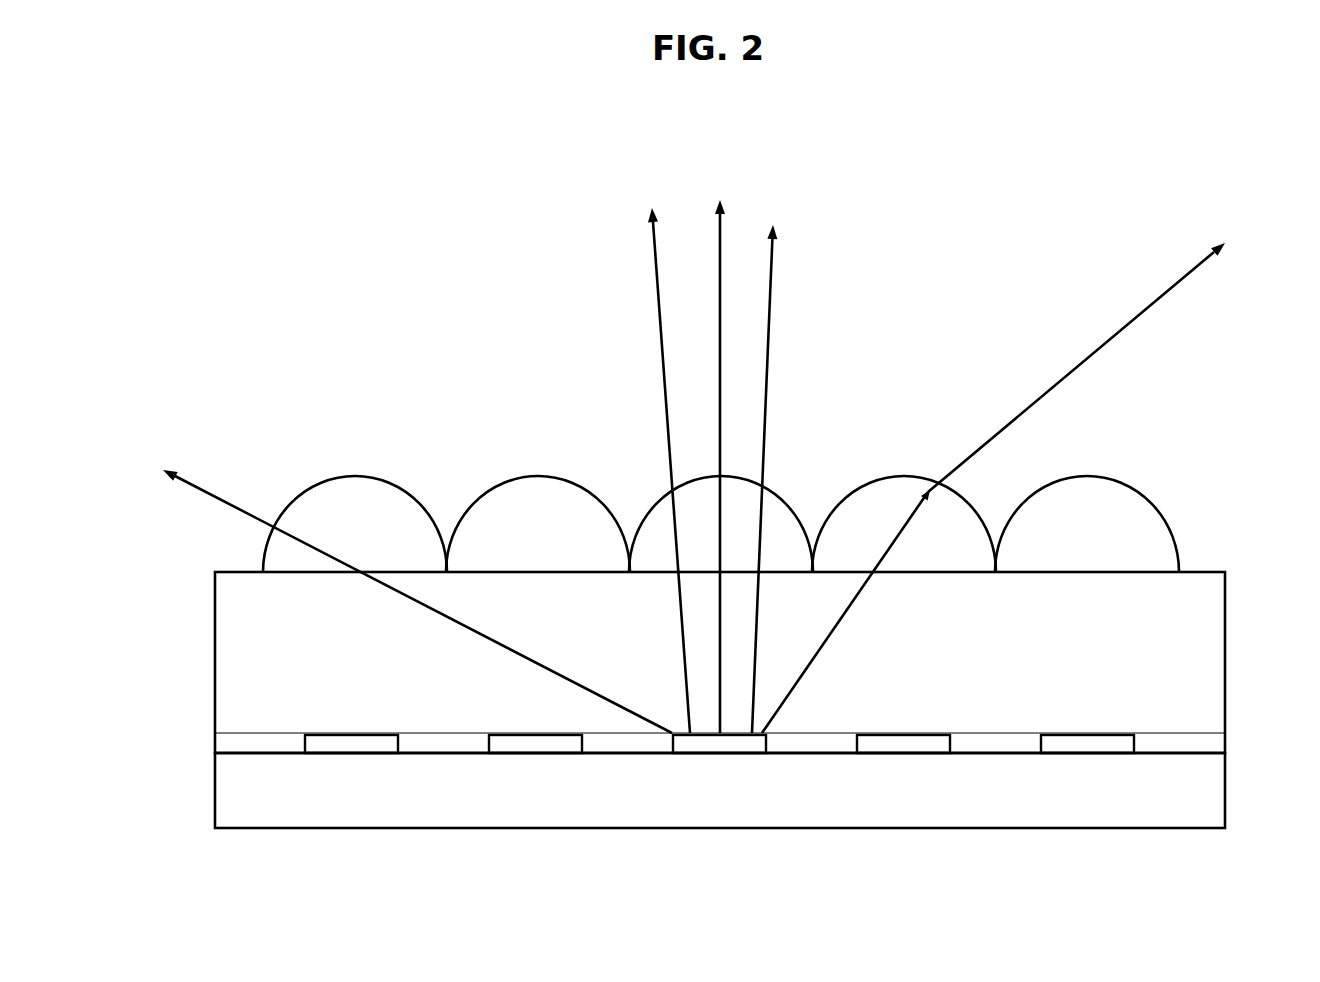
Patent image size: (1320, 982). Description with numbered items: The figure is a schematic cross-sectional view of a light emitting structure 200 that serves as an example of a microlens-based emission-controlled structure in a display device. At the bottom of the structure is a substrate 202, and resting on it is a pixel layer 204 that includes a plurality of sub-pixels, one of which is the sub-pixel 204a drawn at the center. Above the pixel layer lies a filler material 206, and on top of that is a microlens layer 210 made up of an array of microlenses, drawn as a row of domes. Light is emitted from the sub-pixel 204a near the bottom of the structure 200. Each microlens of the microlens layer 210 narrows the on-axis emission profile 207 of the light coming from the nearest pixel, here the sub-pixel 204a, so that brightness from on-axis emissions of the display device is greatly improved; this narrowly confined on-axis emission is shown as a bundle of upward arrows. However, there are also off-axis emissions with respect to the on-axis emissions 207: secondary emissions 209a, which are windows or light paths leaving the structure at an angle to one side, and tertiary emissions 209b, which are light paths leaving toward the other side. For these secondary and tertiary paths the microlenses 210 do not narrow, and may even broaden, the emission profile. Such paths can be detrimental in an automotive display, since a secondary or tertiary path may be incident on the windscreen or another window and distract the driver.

The light emitting structure 200 is at (250, 180).
The substrate 202 is at (1192, 798).
The pixel layer 204 is at (613, 743).
The sub-pixel 204a is at (717, 743).
The filler material 206 is at (1192, 720).
The on-axis emission profile 207 is at (787, 203).
The secondary emissions 209a is at (1054, 372).
The tertiary emissions 209b is at (250, 513).
The microlens layer 210 is at (777, 532).